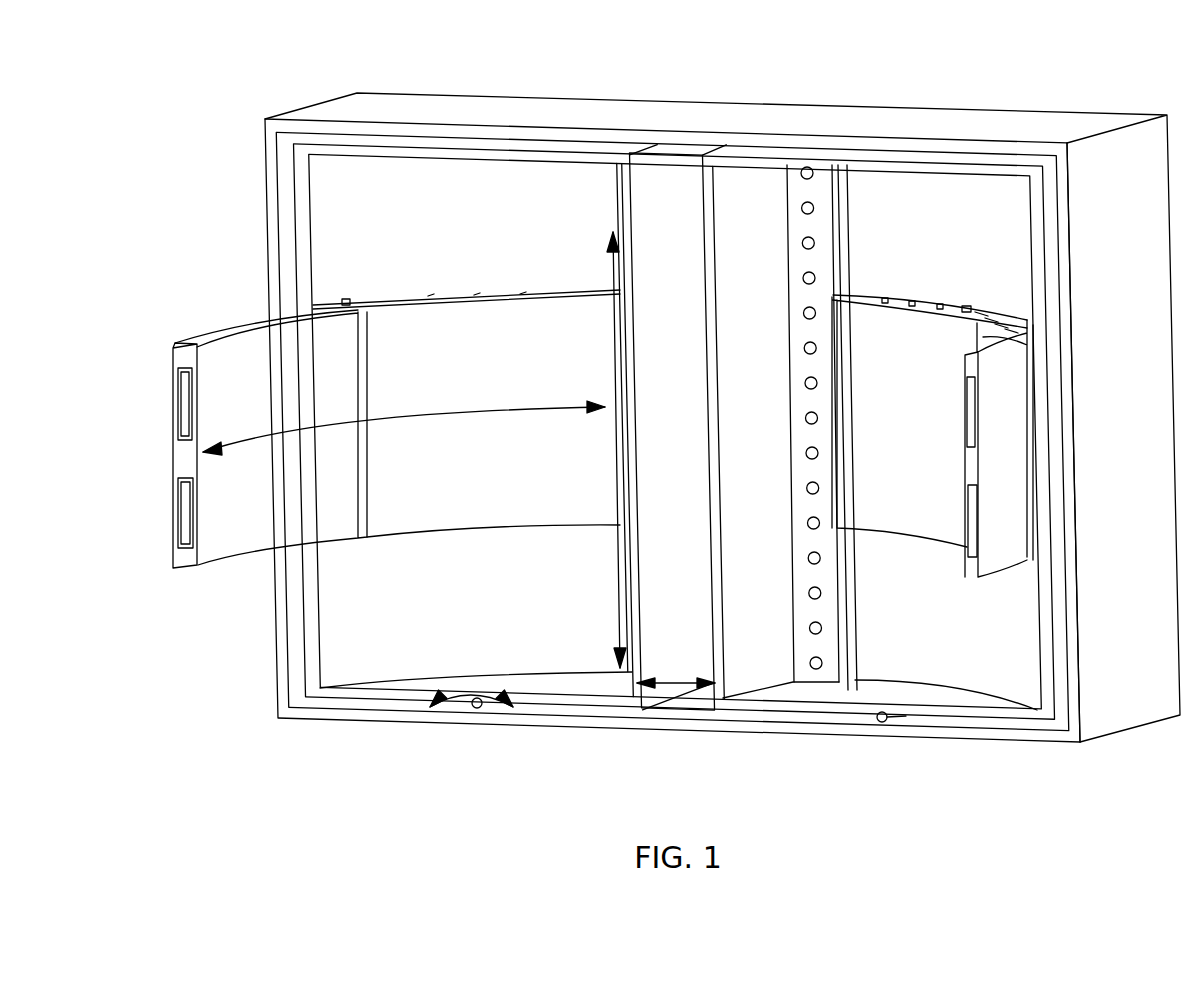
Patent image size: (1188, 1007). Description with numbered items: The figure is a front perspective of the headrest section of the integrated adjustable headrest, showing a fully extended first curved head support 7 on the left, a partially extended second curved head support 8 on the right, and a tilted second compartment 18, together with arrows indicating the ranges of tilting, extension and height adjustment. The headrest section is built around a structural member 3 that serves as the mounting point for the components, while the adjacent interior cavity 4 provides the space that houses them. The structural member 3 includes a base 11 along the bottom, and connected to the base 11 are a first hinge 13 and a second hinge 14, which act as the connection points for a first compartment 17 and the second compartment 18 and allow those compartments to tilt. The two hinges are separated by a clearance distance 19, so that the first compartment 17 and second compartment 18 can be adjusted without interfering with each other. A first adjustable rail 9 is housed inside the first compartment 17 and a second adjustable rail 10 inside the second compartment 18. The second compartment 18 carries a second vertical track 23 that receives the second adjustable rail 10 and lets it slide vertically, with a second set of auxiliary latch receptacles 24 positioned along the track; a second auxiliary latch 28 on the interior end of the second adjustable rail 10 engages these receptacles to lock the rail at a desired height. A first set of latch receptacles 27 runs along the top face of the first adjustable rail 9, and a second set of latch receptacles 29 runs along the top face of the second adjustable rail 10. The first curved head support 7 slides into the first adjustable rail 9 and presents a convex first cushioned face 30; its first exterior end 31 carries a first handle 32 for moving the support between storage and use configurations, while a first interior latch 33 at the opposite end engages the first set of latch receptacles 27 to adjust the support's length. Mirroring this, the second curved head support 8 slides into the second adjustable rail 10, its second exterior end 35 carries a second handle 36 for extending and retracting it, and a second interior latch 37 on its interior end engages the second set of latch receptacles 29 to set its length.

The structural member 3 is at (400, 104).
The interior cavity 4 is at (682, 156).
The first curved head support 7 is at (369, 450).
The second curved head support 8 is at (969, 424).
The first adjustable rail 9 is at (423, 520).
The second adjustable rail 10 is at (902, 525).
The base 11 is at (690, 713).
The first hinge 13 is at (476, 708).
The second hinge 14 is at (881, 722).
The first compartment 17 is at (303, 204).
The second compartment 18 is at (1062, 158).
The clearance distance 19 is at (660, 680).
The second vertical track 23 is at (824, 427).
The second set of auxiliary latch receptacles 24 is at (803, 381).
The first set of latch receptacles 27 is at (431, 294).
The second auxiliary latch 28 is at (798, 313).
The second set of latch receptacles 29 is at (885, 298).
The first cushioned face 30 is at (275, 337).
The first exterior end 31 is at (187, 572).
The first handle 32 is at (183, 425).
The first interior latch 33 is at (347, 301).
The second exterior end 35 is at (966, 368).
The second handle 36 is at (968, 432).
The second interior latch 37 is at (967, 306).